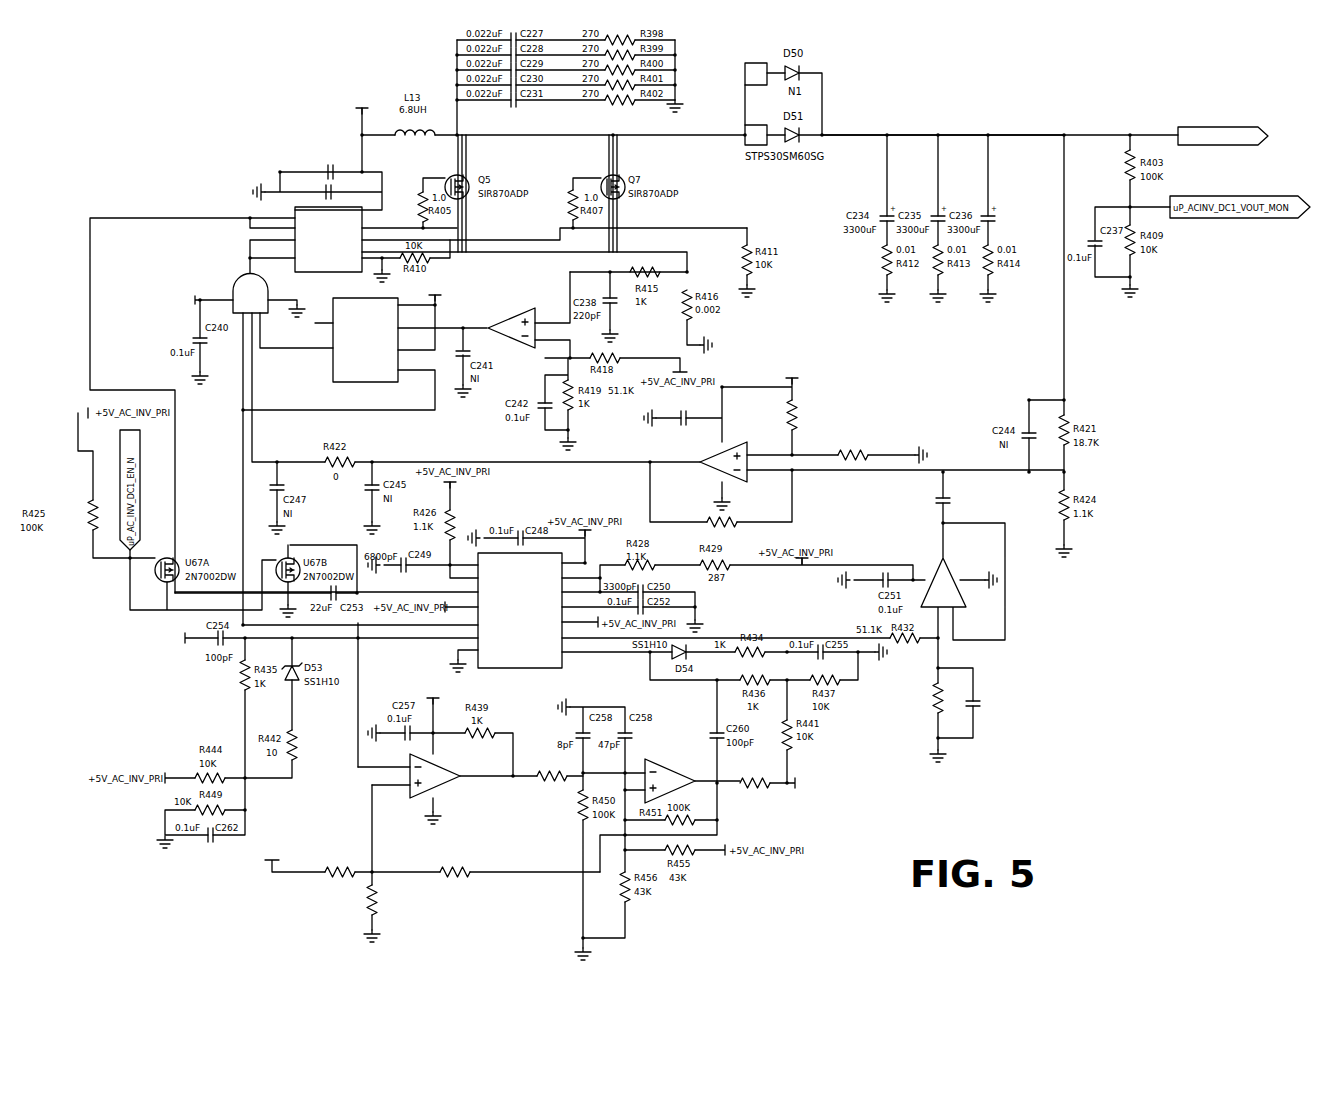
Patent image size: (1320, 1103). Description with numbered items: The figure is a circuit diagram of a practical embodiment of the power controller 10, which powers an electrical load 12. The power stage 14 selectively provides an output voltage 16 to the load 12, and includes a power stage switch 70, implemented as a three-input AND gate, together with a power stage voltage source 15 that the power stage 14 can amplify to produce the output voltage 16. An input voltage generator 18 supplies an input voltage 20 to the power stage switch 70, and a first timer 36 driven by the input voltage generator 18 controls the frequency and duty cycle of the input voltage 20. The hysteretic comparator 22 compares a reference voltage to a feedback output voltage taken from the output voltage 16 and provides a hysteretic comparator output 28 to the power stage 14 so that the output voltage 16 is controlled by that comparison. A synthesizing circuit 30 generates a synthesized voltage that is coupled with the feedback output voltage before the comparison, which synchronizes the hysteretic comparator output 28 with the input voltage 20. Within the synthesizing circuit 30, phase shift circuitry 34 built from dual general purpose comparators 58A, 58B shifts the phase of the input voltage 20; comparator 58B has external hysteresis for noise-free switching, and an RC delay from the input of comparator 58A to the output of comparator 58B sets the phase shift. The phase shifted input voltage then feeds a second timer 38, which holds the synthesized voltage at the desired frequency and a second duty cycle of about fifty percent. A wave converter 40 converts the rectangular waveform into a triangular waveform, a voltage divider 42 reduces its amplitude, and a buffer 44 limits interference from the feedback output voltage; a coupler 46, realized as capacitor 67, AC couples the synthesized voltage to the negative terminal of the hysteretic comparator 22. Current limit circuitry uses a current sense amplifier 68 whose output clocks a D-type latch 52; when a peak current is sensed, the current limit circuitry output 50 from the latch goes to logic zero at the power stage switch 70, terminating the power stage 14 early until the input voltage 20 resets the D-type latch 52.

The power controller 10 is at (1069, 70).
The electrical load 12 is at (1200, 107).
The power stage 14 is at (268, 144).
The power stage voltage source 15 is at (375, 90).
The output voltage 16 is at (972, 118).
The input voltage generator 18 is at (158, 672).
The input voltage 20 is at (241, 490).
The hysteretic comparator 22 is at (748, 448).
The hysteretic comparator output 28 is at (618, 462).
The synthesizing circuit 30 is at (908, 770).
The phase shift circuitry 34 is at (521, 897).
The first timer 36 is at (527, 607).
The second timer 38 is at (520, 610).
The wave converter 40 is at (1072, 623).
The voltage divider 42 is at (962, 584).
The buffer 44 is at (962, 584).
The coupler 46 is at (941, 496).
The capacitor 67 is at (952, 497).
The current limit circuitry output 50 is at (306, 349).
The D-type latch 52 is at (333, 382).
The comparator 58A is at (408, 800).
The comparator 58B is at (683, 784).
The current sense amplifier 68 is at (522, 343).
The power stage switch 70 is at (243, 287).